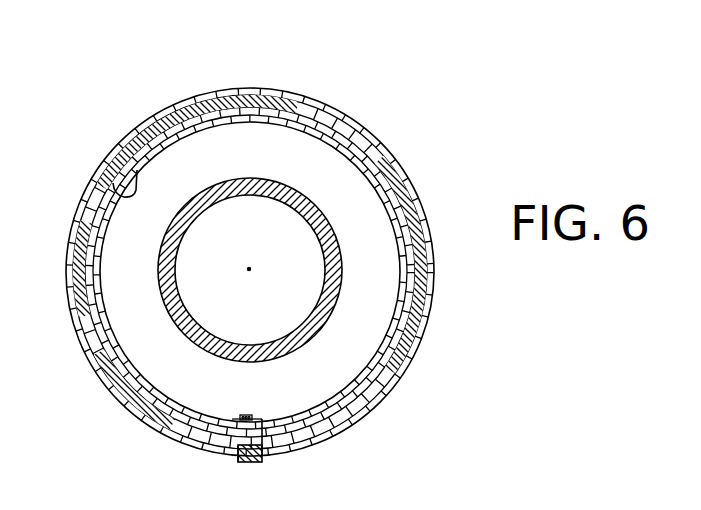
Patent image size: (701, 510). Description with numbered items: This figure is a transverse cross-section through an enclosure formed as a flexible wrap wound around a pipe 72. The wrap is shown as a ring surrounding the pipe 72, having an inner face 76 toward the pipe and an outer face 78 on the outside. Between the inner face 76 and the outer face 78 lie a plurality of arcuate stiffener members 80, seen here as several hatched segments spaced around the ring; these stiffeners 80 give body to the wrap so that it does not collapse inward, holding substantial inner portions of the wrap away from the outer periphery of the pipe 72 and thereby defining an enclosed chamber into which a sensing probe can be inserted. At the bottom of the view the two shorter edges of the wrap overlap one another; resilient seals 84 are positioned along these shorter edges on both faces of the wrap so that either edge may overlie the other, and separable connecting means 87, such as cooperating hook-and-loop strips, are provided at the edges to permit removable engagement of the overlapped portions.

The pipe 72 is at (163, 252).
The inner face 76 is at (103, 184).
The outer face 78 is at (72, 226).
The arcuate stiffener members 80 is at (133, 150).
The seals 84 is at (226, 416).
The separable connecting means 87 is at (254, 418).